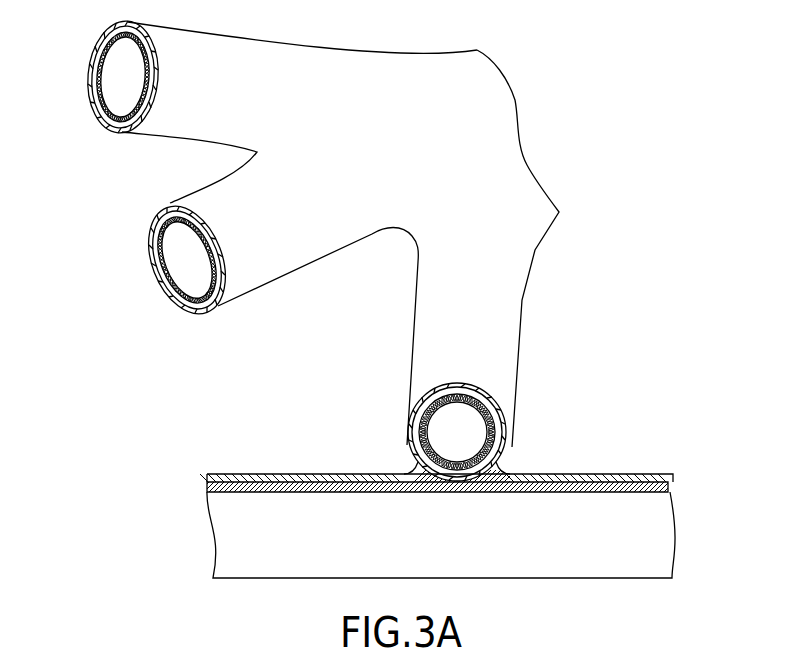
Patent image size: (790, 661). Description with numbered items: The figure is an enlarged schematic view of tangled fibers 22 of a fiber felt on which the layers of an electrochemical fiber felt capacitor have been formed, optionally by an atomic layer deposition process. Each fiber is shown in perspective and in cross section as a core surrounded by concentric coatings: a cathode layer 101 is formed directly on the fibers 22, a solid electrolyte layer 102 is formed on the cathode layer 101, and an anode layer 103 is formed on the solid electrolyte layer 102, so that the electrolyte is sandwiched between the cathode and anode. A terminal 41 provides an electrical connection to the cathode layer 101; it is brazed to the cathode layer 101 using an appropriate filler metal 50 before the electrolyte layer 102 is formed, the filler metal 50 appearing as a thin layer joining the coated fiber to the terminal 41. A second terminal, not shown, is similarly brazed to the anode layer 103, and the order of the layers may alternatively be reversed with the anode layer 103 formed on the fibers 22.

The fibers 22 is at (177, 255).
The cathode layer 101 is at (406, 445).
The solid electrolyte layer 102 is at (512, 449).
The anode layer 103 is at (494, 398).
The filler metal 50 is at (667, 485).
The terminal 41 is at (470, 558).